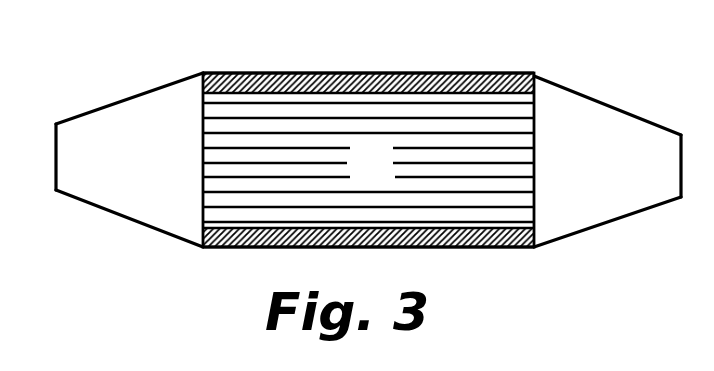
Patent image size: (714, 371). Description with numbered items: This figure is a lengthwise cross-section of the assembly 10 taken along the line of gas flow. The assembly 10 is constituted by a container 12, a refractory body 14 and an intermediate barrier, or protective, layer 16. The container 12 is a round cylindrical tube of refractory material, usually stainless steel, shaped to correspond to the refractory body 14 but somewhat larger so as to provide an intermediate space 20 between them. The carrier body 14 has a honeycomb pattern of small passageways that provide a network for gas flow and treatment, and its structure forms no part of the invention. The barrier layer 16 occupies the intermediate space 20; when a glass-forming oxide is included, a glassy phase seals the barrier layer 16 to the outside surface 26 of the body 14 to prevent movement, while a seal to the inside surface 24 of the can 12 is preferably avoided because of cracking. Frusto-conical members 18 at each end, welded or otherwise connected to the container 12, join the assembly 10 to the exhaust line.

The assembly 10 is at (568, 47).
The container 12 is at (345, 74).
The refractory body 14 is at (388, 176).
The intermediate barrier layer 16 is at (306, 74).
The frusto-conical member 18 is at (143, 93).
The intermediate space 20 is at (446, 74).
The inside surface 24 is at (258, 74).
The outside surface 26 is at (388, 74).